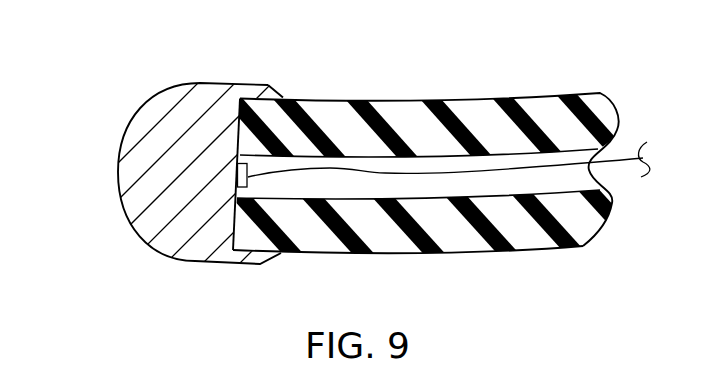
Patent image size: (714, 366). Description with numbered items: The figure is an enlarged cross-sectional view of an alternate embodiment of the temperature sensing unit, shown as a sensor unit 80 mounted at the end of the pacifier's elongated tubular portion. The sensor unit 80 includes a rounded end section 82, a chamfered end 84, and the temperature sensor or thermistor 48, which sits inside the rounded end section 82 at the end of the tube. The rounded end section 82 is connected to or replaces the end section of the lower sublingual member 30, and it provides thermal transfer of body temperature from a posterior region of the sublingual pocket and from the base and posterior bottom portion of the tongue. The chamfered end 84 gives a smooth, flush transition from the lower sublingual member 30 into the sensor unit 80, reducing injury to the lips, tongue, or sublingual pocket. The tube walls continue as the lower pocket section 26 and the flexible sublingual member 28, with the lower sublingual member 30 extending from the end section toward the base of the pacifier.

The sensor unit 80 is at (137, 120).
The rounded end section 82 is at (253, 87).
The chamfered end 84 is at (274, 100).
The lower pocket section 26 is at (532, 96).
The sublingual member 28 is at (417, 100).
The lower sublingual member 30 is at (537, 253).
The temperature sensor or thermistor 48 is at (248, 181).